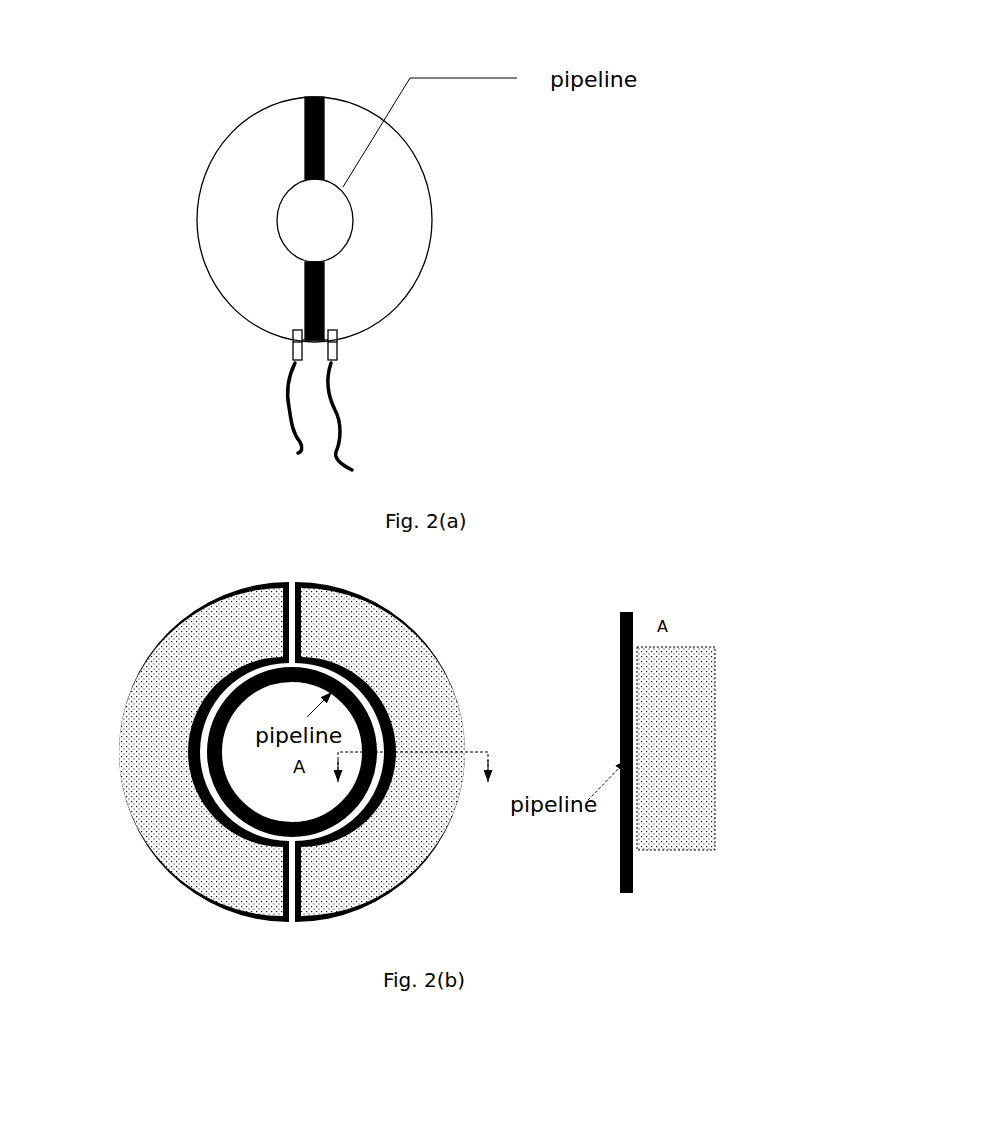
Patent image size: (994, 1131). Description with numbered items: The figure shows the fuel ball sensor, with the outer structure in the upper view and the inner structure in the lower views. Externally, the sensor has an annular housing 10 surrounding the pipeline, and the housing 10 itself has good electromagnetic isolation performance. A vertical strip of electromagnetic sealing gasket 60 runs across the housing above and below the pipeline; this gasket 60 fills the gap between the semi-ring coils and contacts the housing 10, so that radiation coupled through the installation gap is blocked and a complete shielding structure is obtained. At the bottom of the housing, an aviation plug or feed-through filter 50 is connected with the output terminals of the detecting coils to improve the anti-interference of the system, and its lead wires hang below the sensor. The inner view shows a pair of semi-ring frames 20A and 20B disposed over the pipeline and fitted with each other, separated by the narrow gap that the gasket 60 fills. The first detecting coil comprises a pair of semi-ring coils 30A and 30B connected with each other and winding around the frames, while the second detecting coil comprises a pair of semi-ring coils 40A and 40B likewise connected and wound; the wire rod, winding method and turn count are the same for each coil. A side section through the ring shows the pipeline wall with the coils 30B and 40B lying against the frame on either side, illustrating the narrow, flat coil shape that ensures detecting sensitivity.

In FIG. 2A, the housing 10 is at (388, 219).
In FIG. 2A, the aviation plug or feed-through filter 50 is at (412, 391).
In FIG. 2A, the electromagnetic sealing gasket 60 is at (410, 185).
In FIG. 2B, the semi-ring frame 20A is at (233, 642).
In FIG. 2B, the semi-ring frame 20B is at (367, 642).
In FIG. 2B, the semi-ring coil 30A is at (155, 650).
In FIG. 2B, the semi-ring coil 30B is at (428, 648).
In FIG. 2B, the semi-ring coil 40A is at (184, 752).
In FIG. 2B, the semi-ring coil 40B is at (531, 752).